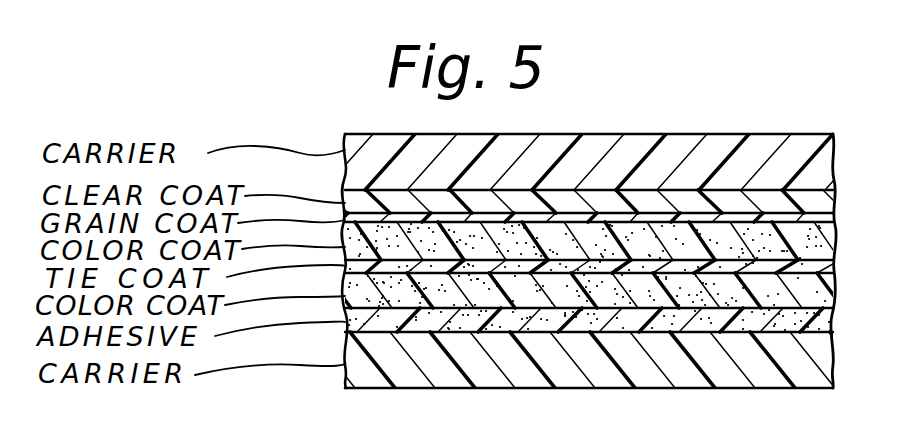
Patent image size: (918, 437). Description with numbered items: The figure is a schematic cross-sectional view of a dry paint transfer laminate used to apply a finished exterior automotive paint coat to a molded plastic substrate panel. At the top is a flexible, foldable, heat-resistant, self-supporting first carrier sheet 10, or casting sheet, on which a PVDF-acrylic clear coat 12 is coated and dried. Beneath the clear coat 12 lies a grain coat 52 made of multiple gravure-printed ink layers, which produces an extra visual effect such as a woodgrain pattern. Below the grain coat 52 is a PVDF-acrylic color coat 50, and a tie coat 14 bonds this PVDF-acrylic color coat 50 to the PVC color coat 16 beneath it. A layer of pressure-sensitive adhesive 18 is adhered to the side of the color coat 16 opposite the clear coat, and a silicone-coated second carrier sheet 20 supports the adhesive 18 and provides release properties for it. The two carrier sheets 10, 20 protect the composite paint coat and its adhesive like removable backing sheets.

The first carrier sheet 10 is at (820, 167).
The clear coat 12 is at (824, 206).
The grain coat 52 is at (826, 217).
The PVDF-acrylic color coat 50 is at (826, 246).
The tie coat 14 is at (824, 273).
The color coat 16 is at (835, 288).
The pressure-sensitive adhesive 18 is at (826, 321).
The second carrier sheet 20 is at (822, 367).